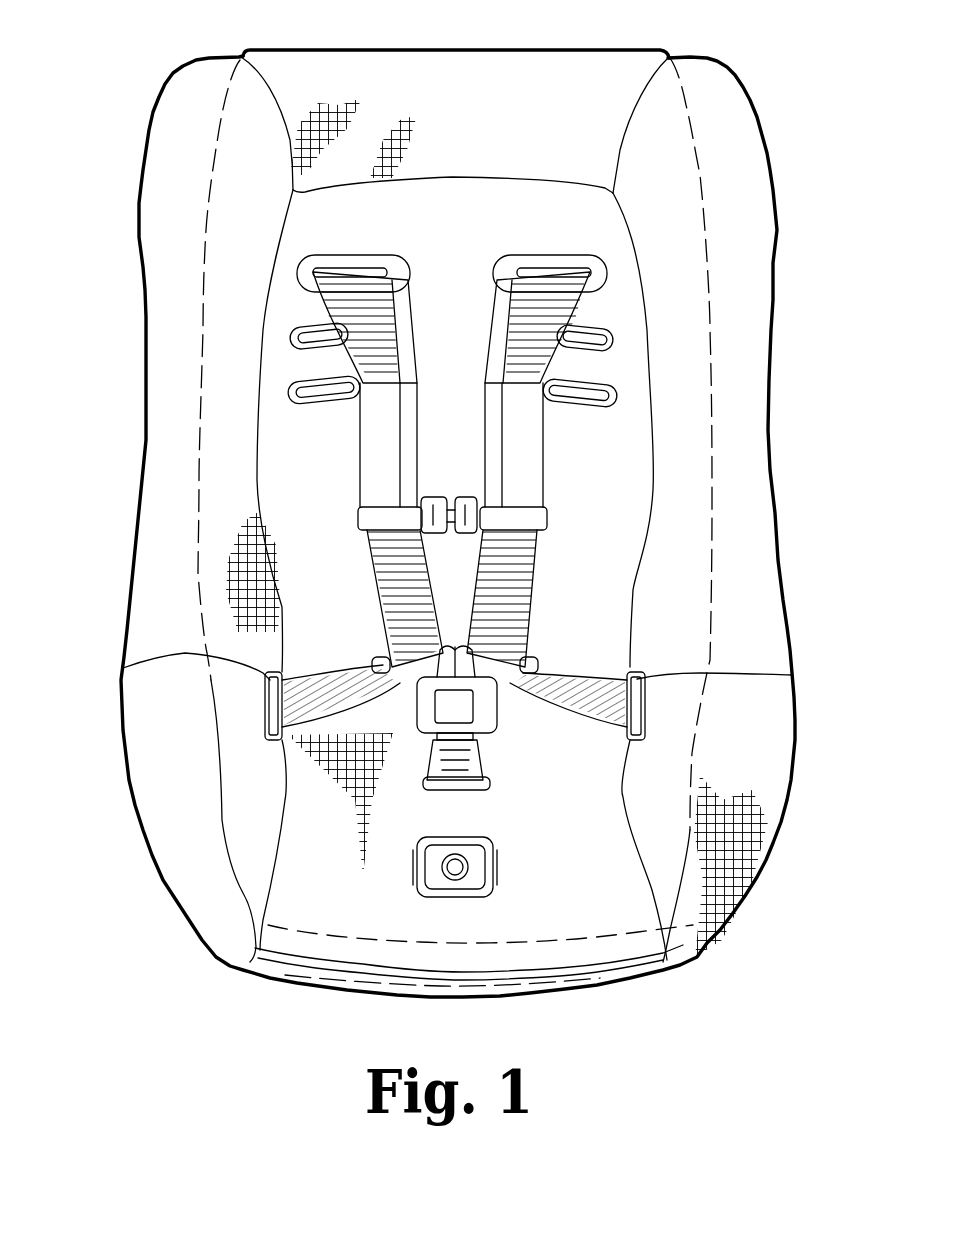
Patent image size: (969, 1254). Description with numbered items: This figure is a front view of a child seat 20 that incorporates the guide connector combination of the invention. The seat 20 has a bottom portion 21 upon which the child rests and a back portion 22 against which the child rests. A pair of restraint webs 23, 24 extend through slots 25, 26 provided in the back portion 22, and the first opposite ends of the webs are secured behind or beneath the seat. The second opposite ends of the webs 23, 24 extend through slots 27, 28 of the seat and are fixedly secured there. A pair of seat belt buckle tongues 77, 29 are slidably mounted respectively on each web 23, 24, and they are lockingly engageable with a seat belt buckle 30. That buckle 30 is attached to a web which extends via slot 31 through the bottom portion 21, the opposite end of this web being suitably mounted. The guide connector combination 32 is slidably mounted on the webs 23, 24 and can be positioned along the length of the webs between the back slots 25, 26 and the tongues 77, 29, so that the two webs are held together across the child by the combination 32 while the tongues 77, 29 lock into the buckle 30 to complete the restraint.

The seat 20 is at (742, 48).
The bottom portion 21 is at (563, 918).
The back portion 22 is at (481, 191).
The web 23 is at (403, 355).
The web 24 is at (502, 343).
The slot 25 is at (360, 253).
The slot 26 is at (563, 253).
The slot 27 is at (123, 668).
The slot 28 is at (410, 673).
The seat belt buckle tongue 29 is at (497, 740).
The seat belt buckle 30 is at (497, 790).
The slot 31 is at (500, 847).
The guide connector combination 32 is at (448, 484).
The seat belt buckle tongue 77 is at (792, 675).